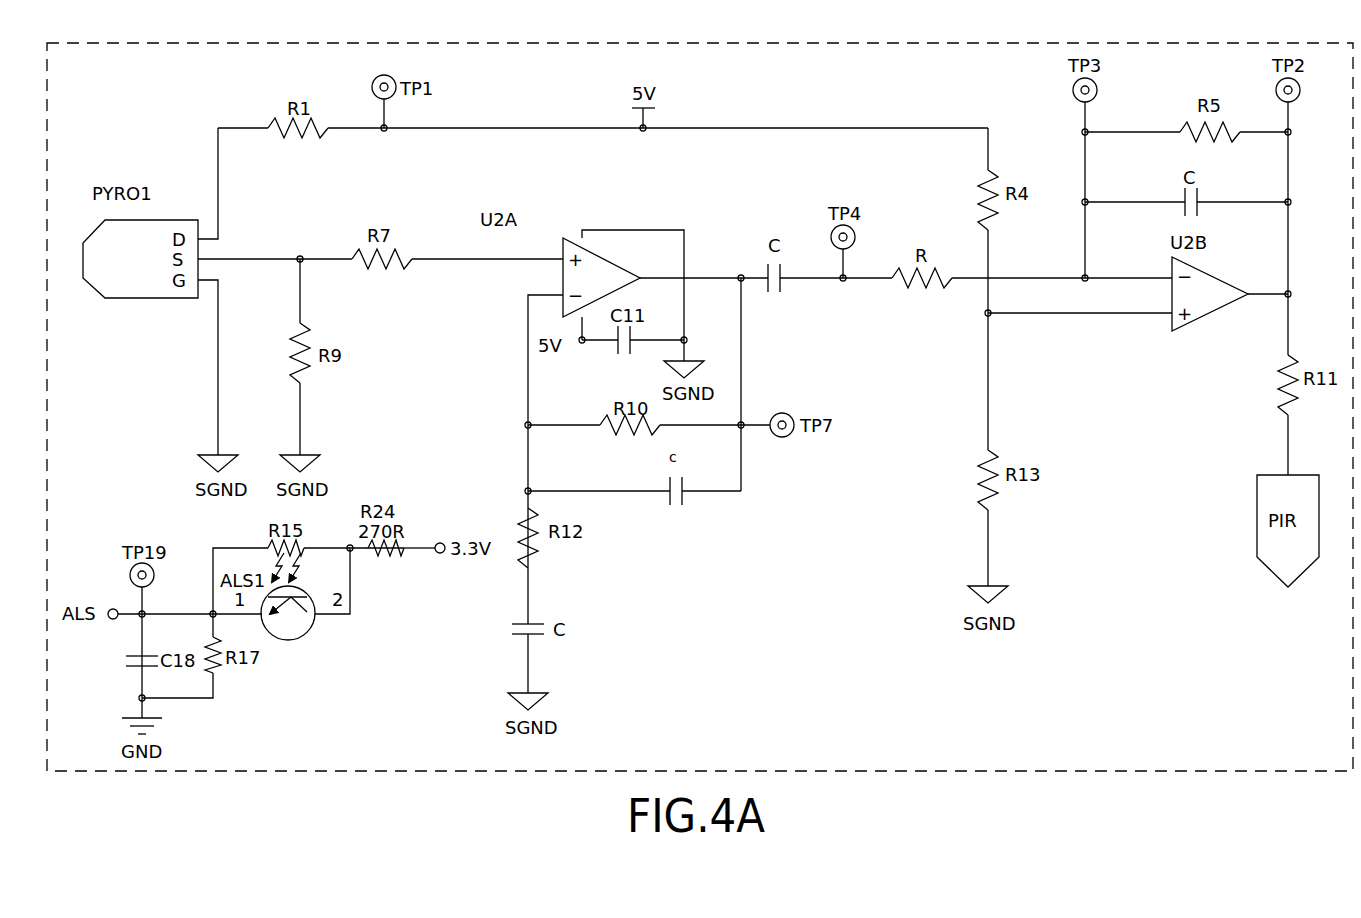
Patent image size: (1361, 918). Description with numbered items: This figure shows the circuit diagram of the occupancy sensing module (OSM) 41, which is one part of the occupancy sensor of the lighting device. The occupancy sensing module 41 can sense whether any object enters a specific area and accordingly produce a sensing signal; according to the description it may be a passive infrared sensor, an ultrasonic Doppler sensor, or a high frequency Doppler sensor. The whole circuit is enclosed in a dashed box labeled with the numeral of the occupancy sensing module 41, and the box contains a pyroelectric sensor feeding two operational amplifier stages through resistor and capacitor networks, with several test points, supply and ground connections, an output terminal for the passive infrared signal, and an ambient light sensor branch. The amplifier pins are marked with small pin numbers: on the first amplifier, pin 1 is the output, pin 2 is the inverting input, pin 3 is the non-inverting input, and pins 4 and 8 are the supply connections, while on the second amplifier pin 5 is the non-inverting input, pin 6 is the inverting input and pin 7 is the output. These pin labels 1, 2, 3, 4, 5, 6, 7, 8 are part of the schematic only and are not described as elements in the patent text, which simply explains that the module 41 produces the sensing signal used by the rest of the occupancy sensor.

The occupancy sensing module 41 is at (1146, 39).
The op-amp U2A output pin 1 is at (704, 266).
The op-amp U2A inverting input pin 2 is at (545, 448).
The op-amp U2A non-inverting input pin 3 is at (487, 248).
The op-amp U2A supply pin 4 is at (624, 286).
The op-amp U2B non-inverting input pin 5 is at (1080, 301).
The op-amp U2B inverting input pin 6 is at (1128, 265).
The op-amp U2B output pin 7 is at (1268, 281).
The op-amp U2A supply pin 8 is at (575, 328).